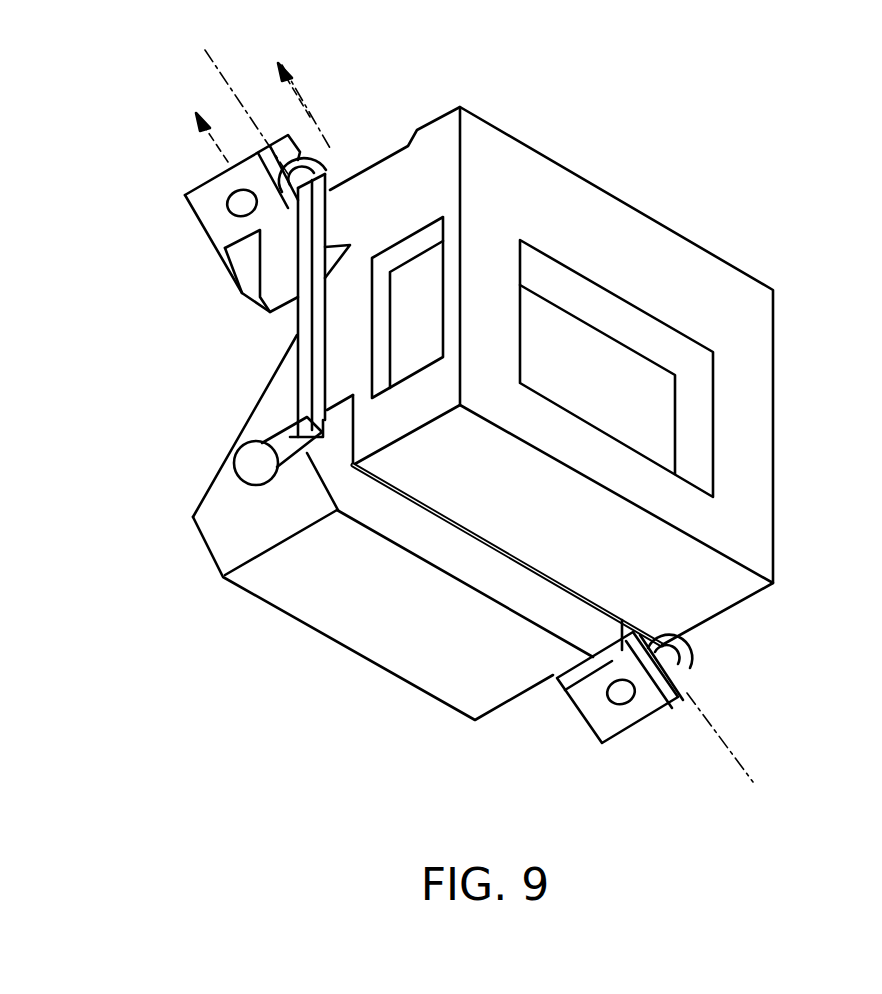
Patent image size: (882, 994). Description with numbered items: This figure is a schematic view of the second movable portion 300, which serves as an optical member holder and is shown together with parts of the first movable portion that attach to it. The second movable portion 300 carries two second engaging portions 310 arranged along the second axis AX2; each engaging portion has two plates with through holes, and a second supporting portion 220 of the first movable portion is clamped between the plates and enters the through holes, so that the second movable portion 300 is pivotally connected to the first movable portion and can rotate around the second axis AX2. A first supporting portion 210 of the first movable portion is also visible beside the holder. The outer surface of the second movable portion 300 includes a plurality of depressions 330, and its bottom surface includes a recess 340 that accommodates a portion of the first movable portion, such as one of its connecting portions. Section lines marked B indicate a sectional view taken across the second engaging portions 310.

The second movable portion 300 is at (641, 227).
The depressions 330 is at (655, 422).
The recess 340 is at (431, 538).
The first supporting portion 210 is at (248, 454).
The second engaging portion 310 is at (214, 191).
The second supporting portion 220 is at (238, 214).
The second axis AX2 is at (745, 766).
The section line B is at (244, 103).